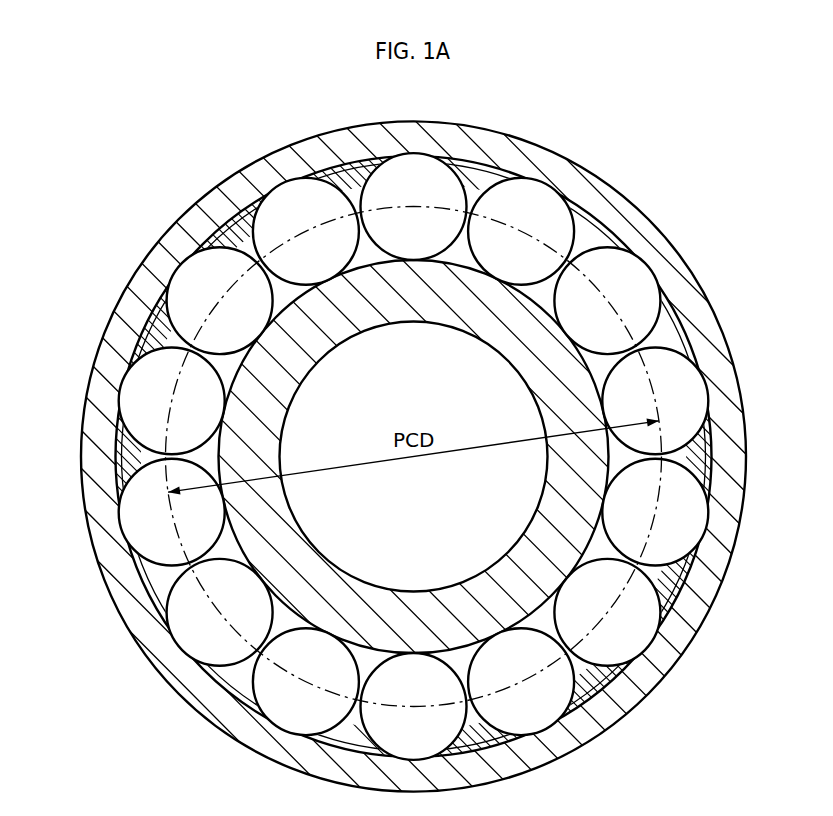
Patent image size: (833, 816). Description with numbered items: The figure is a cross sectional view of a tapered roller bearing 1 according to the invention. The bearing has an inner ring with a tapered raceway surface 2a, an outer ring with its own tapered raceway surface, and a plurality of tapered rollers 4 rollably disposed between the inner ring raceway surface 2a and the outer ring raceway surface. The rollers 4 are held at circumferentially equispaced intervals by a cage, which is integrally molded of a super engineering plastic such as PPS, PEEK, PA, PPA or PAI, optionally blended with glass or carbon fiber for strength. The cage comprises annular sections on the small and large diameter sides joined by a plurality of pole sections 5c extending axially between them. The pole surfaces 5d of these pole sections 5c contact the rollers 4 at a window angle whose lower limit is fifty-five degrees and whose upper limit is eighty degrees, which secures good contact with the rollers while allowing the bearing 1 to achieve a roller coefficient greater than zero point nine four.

The tapered roller bearing 1 is at (414, 408).
The tapered raceway surface 2a is at (414, 408).
The tapered rollers 4 is at (446, 417).
The pole sections 5c is at (414, 440).
The pole surfaces 5d is at (414, 408).